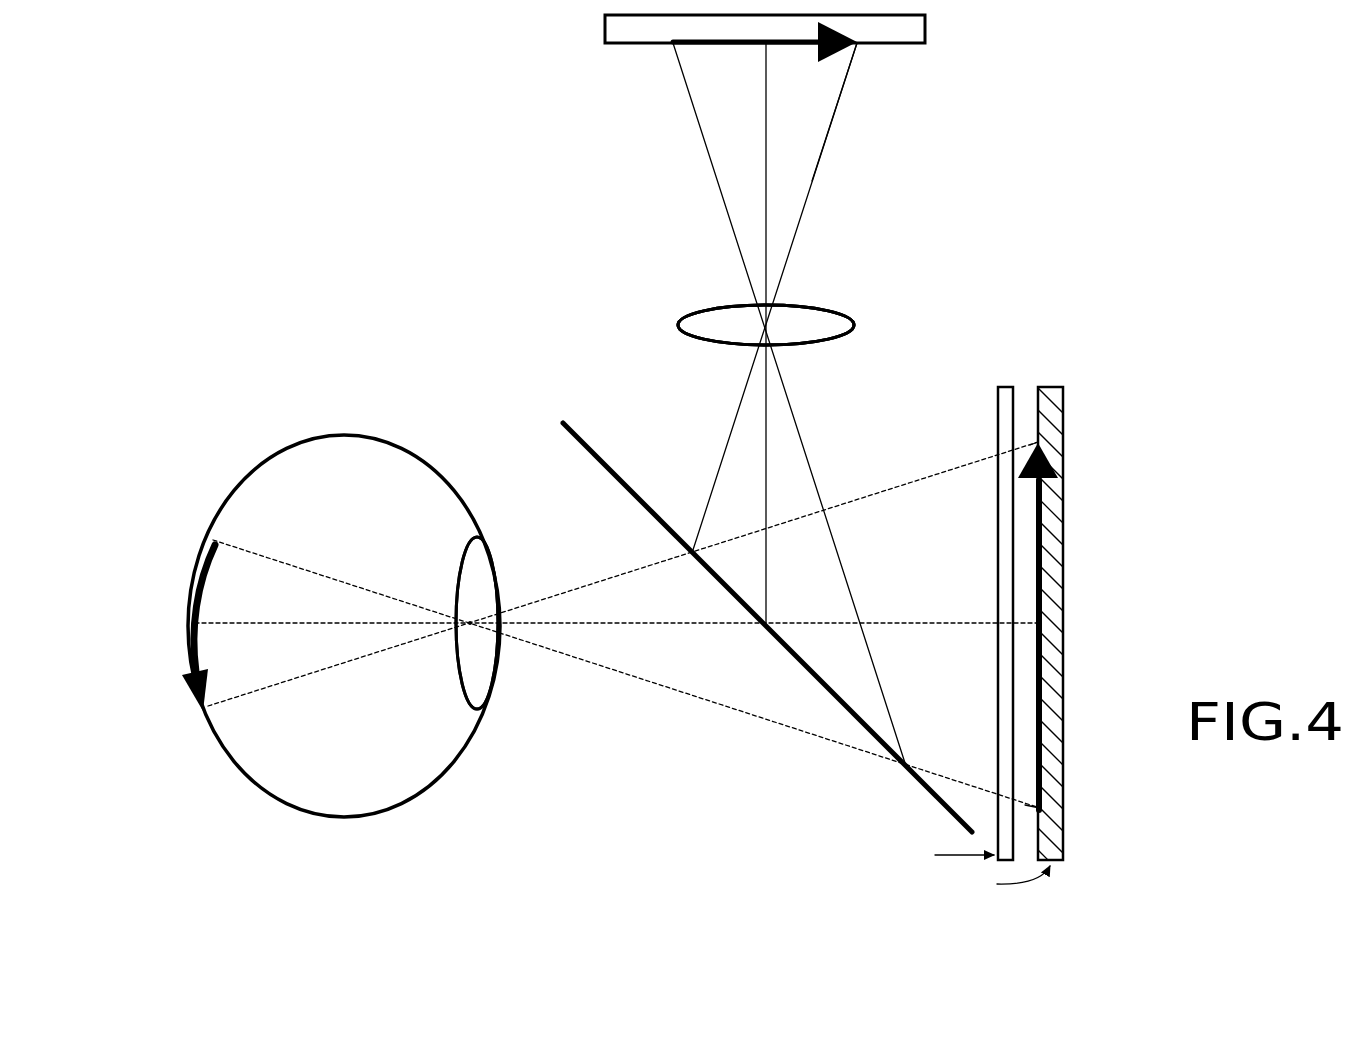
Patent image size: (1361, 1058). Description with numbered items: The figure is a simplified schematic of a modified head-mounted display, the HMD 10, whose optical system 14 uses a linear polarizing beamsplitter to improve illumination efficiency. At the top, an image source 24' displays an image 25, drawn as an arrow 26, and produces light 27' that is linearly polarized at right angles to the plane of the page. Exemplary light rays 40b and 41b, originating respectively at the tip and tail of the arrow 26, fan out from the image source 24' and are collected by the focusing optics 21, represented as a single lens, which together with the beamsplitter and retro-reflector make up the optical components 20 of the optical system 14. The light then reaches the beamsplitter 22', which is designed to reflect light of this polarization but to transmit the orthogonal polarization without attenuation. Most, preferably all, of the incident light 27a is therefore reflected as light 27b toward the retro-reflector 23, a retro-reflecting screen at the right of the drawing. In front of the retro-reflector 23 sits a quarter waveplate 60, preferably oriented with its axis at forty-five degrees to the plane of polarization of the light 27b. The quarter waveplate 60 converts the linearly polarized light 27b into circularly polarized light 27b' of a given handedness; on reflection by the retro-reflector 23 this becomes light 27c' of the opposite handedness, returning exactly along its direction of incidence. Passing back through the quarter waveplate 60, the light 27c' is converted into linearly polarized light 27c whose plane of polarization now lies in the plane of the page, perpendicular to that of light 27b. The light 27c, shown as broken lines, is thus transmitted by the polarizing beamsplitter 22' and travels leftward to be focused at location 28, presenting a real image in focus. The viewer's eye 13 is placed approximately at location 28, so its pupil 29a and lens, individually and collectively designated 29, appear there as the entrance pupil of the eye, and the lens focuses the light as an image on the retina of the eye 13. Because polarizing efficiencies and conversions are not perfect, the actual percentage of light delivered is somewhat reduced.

The HMD 10 is at (563, 138).
The eye 13 is at (373, 432).
The optical system 14 is at (618, 263).
The optical components 20 is at (704, 286).
The focusing optics 21 is at (633, 313).
The beamsplitter 22' is at (711, 600).
The retro-reflector 23 is at (1052, 387).
The image source 24' is at (611, 29).
The image 25 is at (695, 47).
The arrow 26 is at (748, 47).
The light 27' is at (854, 131).
The incident light 27a is at (813, 428).
The reflected light 27b is at (623, 568).
The circularly polarized light 27b' is at (1008, 387).
The light rays 27c is at (626, 644).
The reflected circularly polarized light 27c' is at (1043, 663).
The focus location 28 is at (486, 608).
The pupil and lens of the eye 29 is at (487, 545).
The pupil 29a is at (480, 574).
The light ray 40b is at (823, 152).
The light ray 41b is at (710, 168).
The quarter waveplate 60 is at (998, 410).